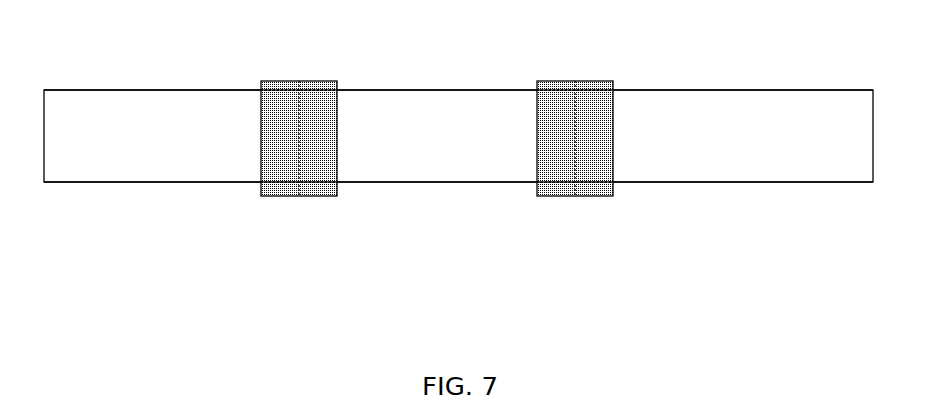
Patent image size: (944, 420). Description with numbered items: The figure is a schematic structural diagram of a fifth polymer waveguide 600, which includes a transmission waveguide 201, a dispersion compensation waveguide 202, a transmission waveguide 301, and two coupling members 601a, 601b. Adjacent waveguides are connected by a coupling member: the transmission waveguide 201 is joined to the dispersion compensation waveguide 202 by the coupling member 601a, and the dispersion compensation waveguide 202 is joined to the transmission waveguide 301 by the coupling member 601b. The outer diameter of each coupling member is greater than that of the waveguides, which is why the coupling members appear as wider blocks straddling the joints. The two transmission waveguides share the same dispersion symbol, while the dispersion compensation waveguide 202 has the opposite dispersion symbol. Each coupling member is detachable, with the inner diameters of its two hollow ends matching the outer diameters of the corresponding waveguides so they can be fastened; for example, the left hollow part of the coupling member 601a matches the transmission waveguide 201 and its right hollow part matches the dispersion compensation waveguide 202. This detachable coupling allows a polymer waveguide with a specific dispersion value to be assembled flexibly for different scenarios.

The polymer waveguide 600 is at (473, 321).
The transmission waveguide 201 is at (172, 90).
The dispersion compensation waveguide 202 is at (404, 90).
The transmission waveguide 301 is at (709, 90).
The coupling member 601a is at (298, 197).
The coupling member 601b is at (577, 203).